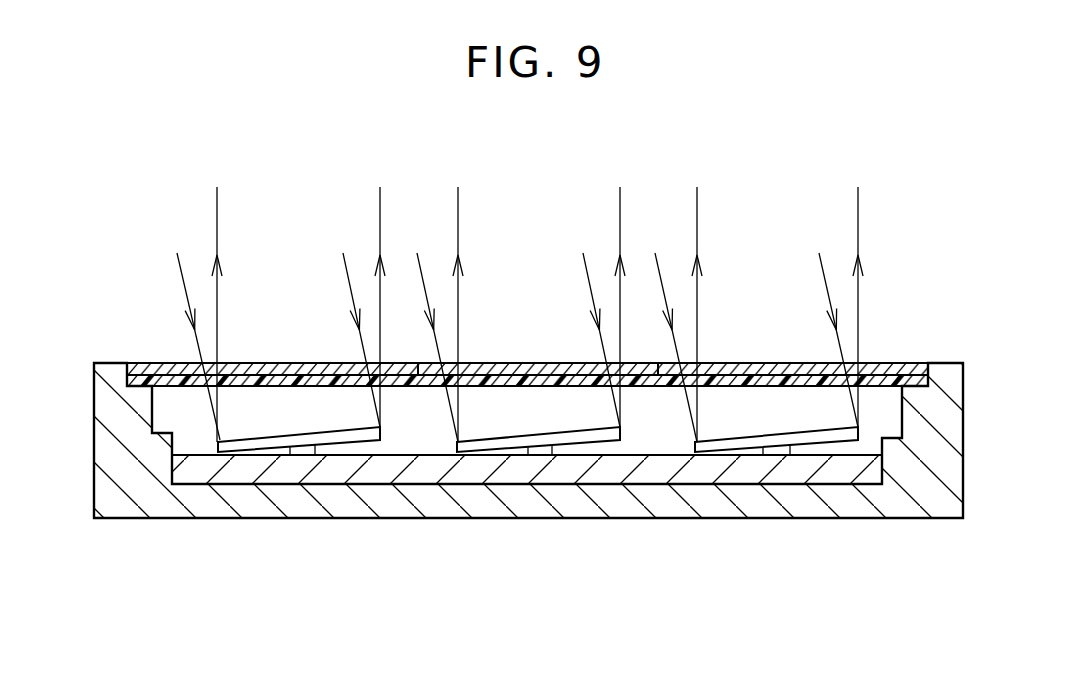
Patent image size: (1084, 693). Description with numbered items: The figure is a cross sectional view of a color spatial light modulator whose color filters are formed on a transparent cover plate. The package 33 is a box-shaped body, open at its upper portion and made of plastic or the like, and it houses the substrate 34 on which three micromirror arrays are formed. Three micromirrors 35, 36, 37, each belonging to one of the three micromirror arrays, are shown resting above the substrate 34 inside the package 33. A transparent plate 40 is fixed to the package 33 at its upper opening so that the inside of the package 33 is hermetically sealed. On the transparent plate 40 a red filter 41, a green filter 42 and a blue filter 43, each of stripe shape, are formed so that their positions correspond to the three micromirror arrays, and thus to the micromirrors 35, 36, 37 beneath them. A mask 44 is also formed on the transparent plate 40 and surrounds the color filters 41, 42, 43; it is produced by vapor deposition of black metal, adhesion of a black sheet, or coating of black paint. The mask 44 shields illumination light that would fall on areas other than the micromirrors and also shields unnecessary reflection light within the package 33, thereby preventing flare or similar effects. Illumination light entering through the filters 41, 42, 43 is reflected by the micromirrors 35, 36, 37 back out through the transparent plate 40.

The package 33 is at (257, 510).
The substrate 34 is at (690, 473).
The micromirror 35 is at (353, 437).
The micromirror 36 is at (598, 437).
The micromirror 37 is at (827, 438).
The transparent plate 40 is at (413, 392).
The red filter 41 is at (279, 362).
The green filter 42 is at (526, 362).
The blue filter 43 is at (763, 362).
The mask 44 is at (649, 362).